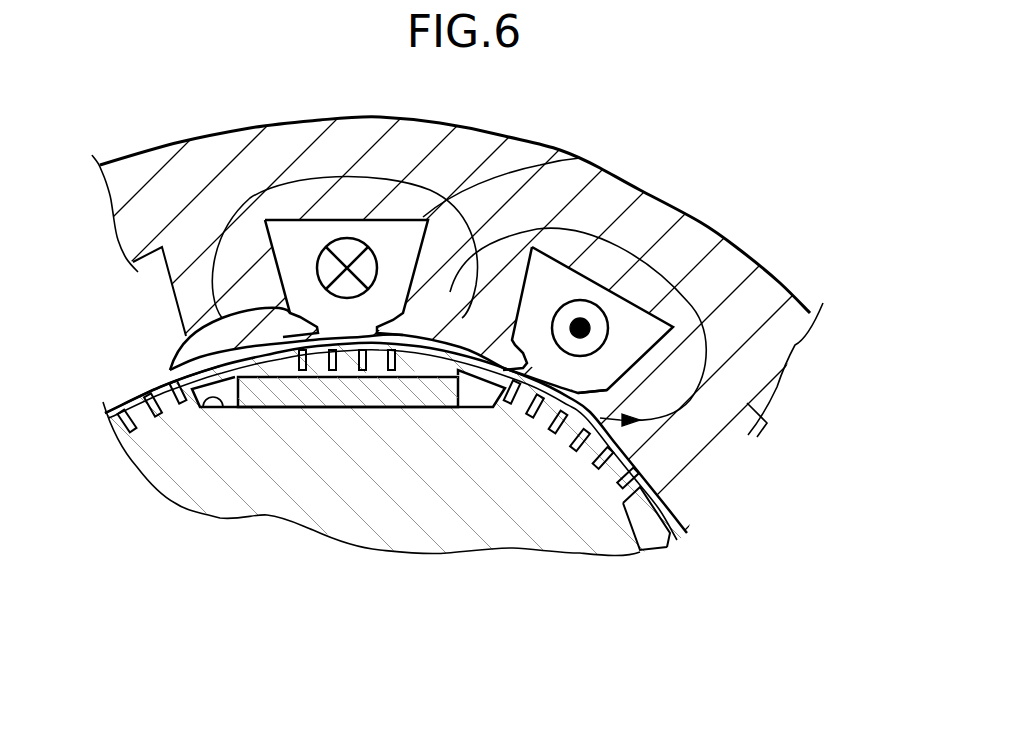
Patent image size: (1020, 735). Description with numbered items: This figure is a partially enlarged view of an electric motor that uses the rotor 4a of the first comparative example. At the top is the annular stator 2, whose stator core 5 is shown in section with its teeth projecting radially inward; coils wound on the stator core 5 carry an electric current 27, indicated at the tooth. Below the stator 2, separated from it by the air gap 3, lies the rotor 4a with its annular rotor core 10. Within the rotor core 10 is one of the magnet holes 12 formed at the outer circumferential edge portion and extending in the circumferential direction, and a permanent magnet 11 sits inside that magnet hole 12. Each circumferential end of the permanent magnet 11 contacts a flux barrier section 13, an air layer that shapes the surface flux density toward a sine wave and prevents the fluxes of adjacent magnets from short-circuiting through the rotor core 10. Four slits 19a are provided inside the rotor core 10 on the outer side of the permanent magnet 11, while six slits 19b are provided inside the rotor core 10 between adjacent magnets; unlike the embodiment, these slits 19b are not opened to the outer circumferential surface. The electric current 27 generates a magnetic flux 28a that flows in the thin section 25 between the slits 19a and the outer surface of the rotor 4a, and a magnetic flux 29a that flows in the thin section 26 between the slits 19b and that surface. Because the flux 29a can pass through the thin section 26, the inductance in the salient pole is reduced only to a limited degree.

The stator 2 is at (760, 302).
The air gap 3 is at (683, 508).
The rotor 4a is at (178, 462).
The stator core 5 is at (168, 180).
The rotor core 10 is at (180, 466).
The permanent magnet 11 is at (340, 405).
The magnet hole 12 is at (238, 408).
The flux barrier section 13 is at (223, 403).
The slit 19a is at (280, 383).
The slit 19b is at (605, 463).
The thin section 25 is at (258, 327).
The thin section 26 is at (620, 442).
The electric current 27 is at (588, 300).
The magnetic flux 28a is at (422, 187).
The magnetic flux 29a is at (657, 275).